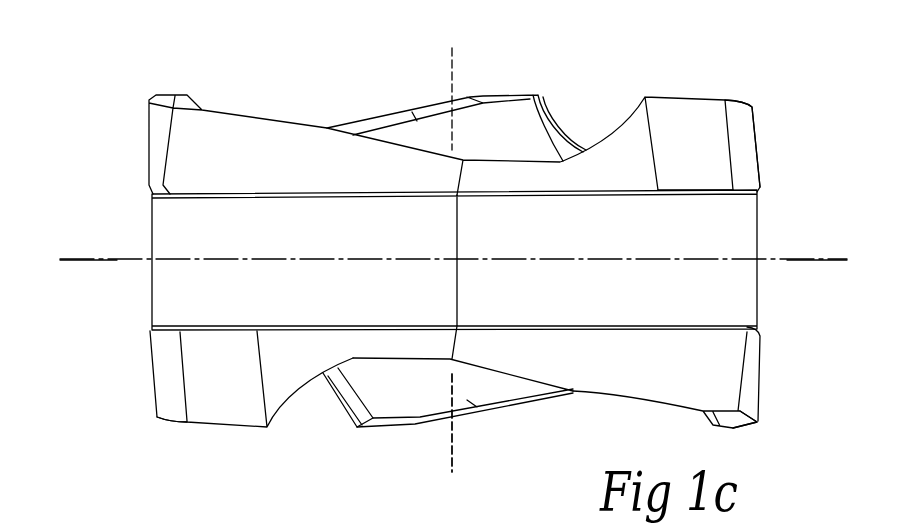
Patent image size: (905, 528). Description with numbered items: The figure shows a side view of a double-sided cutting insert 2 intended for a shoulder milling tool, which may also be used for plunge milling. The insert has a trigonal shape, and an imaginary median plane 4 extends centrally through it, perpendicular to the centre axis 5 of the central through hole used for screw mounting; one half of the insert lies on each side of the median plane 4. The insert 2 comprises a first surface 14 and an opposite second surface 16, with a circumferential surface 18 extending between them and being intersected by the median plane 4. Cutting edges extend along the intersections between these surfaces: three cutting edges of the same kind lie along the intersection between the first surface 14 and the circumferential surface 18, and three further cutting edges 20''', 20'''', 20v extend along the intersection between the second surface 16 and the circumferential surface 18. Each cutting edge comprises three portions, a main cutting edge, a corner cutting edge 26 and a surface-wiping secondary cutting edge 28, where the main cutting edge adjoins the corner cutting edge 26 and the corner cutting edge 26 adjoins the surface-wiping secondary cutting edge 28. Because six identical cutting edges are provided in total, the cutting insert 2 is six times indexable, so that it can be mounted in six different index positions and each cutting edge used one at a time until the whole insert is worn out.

The cutting insert 2 is at (125, 77).
The median plane 4 is at (84, 258).
The centre axis 5 is at (452, 444).
The first surface 14 is at (303, 103).
The second surface 16 is at (305, 422).
The circumferential surface 18 is at (130, 299).
The cutting edge 20'''' is at (139, 459).
The cutting edge 20v is at (375, 437).
The cutting edge 20''' is at (798, 457).
The corner cutting edge 26 is at (747, 100).
The surface-wiping secondary cutting edge 28 is at (723, 88).